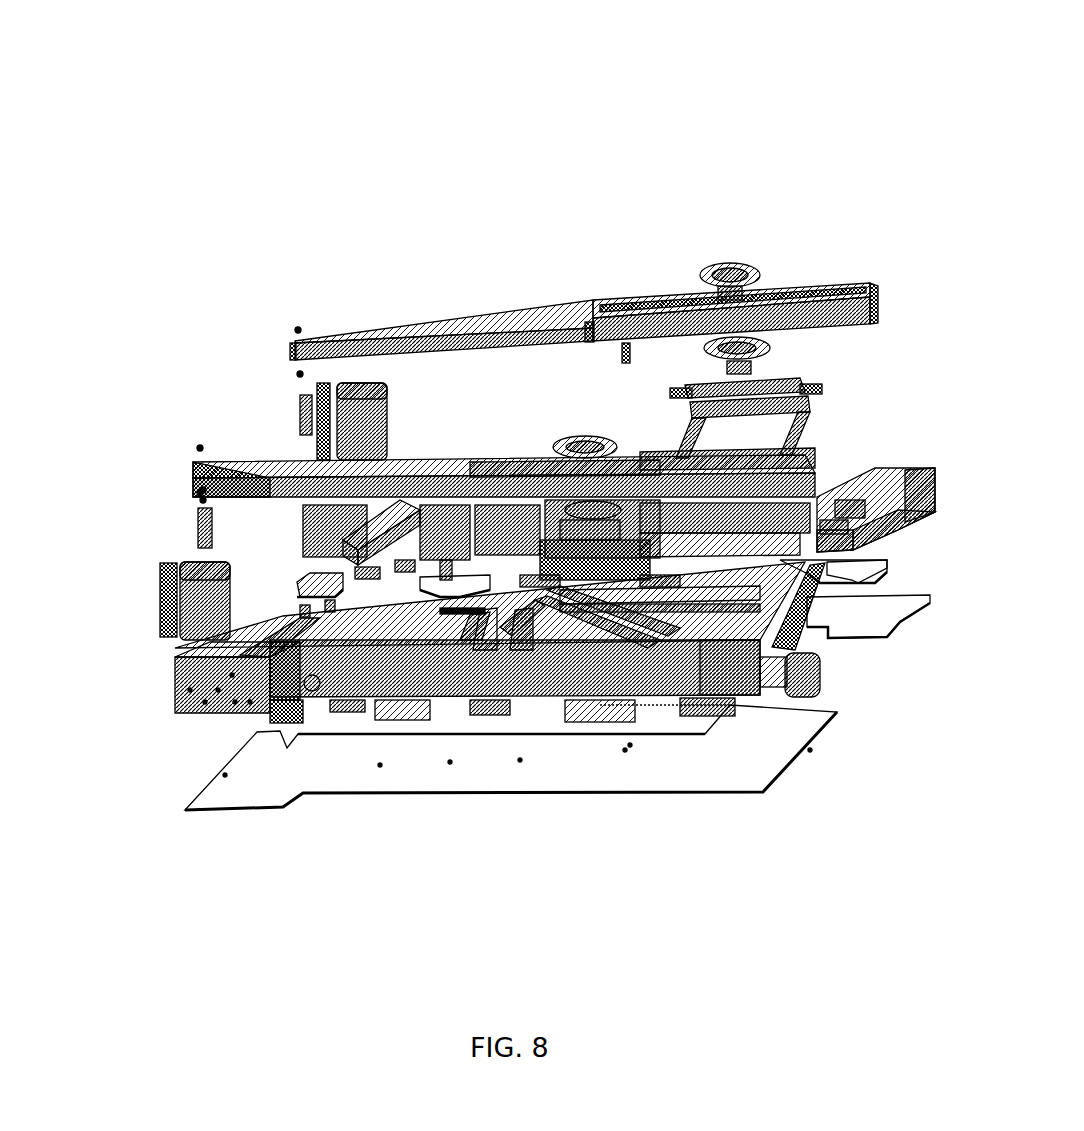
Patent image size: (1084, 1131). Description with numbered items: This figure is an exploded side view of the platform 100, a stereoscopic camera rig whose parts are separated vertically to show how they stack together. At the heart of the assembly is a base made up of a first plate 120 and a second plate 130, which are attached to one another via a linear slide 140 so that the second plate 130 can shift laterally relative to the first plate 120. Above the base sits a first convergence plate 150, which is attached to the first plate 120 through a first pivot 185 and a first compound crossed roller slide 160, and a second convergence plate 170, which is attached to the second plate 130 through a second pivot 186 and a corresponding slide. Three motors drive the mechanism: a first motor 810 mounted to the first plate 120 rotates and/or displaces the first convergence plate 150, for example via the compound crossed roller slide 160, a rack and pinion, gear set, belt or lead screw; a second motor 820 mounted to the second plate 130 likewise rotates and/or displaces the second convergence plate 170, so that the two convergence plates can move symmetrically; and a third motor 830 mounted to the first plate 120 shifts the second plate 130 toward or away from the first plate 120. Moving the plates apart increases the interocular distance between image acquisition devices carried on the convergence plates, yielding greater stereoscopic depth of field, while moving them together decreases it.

The platform 100 is at (527, 72).
The first plate 120 is at (727, 626).
The second plate 130 is at (848, 460).
The linear slide 140 is at (377, 510).
The first convergence plate 150 is at (240, 470).
The first compound crossed roller slide 160 is at (583, 580).
The second convergence plate 170 is at (413, 327).
The first pivot 185 is at (197, 535).
The second pivot 186 is at (300, 412).
The first motor 810 is at (440, 703).
The second motor 820 is at (400, 567).
The third motor 830 is at (598, 600).